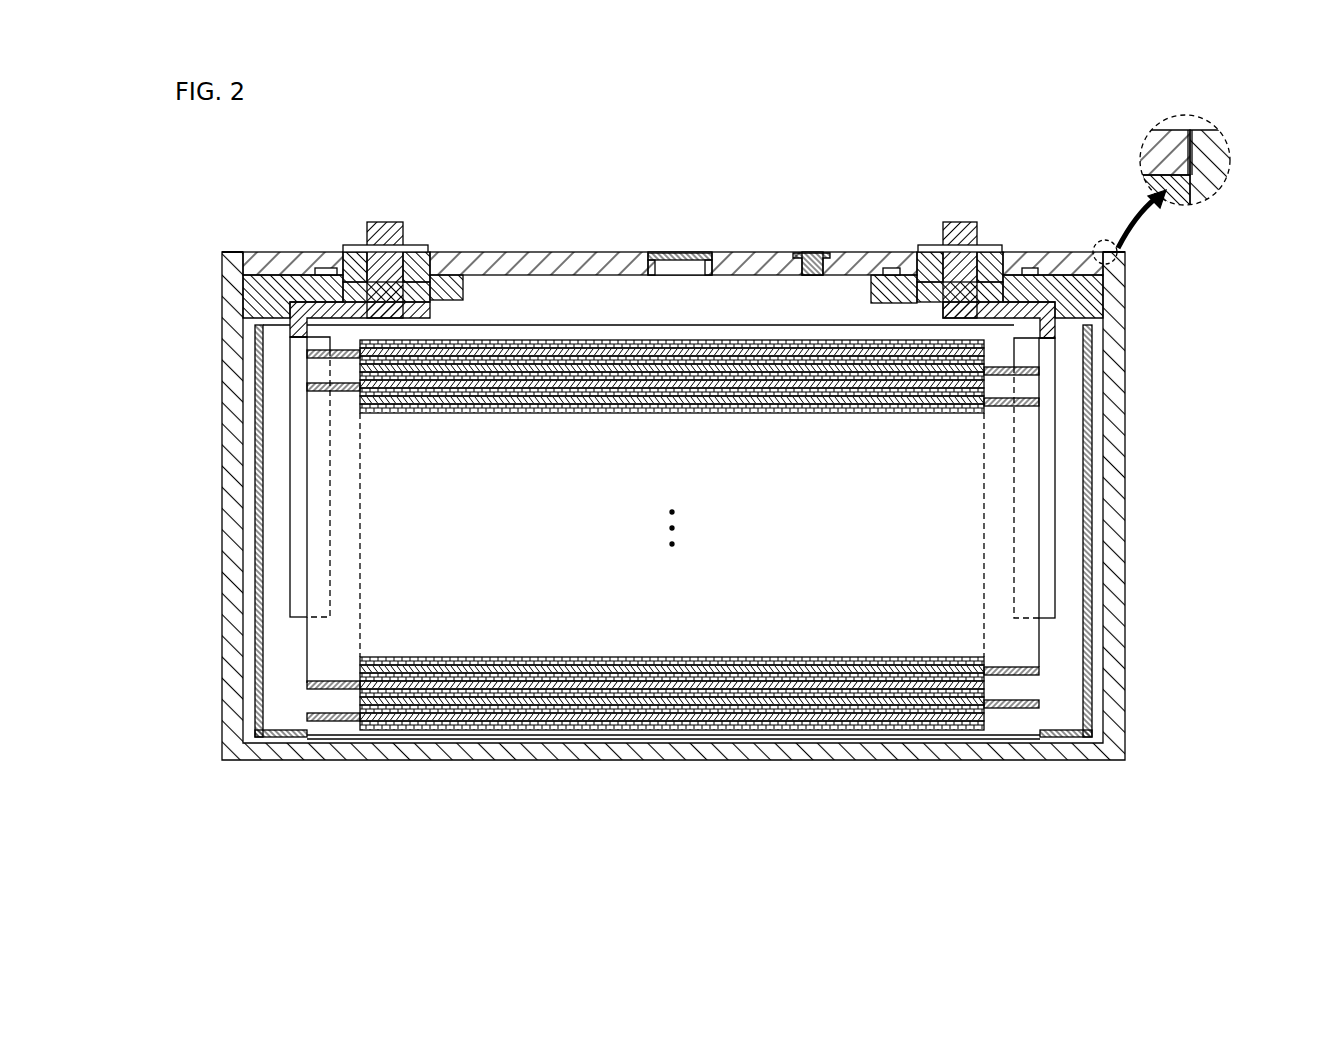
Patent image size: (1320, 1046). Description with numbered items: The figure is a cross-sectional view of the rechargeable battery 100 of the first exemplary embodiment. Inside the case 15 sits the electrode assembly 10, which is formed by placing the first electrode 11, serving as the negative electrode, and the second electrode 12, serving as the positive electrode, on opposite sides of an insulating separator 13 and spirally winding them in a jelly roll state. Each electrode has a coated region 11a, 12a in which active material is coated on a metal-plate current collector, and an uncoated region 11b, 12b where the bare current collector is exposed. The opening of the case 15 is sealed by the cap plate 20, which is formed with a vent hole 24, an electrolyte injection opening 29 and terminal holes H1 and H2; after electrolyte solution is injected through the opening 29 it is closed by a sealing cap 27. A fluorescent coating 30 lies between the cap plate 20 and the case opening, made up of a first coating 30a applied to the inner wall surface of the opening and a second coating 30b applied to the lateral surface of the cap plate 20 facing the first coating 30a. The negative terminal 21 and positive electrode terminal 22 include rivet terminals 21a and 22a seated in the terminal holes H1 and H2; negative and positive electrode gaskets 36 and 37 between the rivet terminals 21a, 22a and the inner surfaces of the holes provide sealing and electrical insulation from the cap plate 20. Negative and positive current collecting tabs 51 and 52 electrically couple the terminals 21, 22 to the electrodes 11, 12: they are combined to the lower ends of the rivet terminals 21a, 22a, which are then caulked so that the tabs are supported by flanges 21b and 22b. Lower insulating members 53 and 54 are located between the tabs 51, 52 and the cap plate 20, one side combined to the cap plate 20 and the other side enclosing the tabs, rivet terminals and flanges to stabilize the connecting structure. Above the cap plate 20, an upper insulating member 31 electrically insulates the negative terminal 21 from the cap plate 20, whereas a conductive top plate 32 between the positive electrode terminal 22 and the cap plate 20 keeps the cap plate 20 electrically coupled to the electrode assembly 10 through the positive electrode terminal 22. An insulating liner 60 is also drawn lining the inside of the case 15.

The rechargeable battery 100 is at (652, 122).
The electrode assembly 10 is at (672, 588).
The first electrode 11 is at (311, 580).
The coated region 11a is at (320, 818).
The uncoated region 11b is at (308, 352).
The second electrode 12 is at (969, 580).
The coated region 12a is at (908, 712).
The uncoated region 12b is at (999, 559).
The separator 13 is at (686, 735).
The case 15 is at (1126, 488).
The cap plate 20 is at (752, 258).
The negative terminal 21 is at (424, 316).
The rivet terminal 21a is at (388, 325).
The flange 21b is at (422, 303).
The positive electrode terminal 22 is at (944, 302).
The rivet terminal 22a is at (1017, 355).
The flange 22b is at (930, 290).
The vent hole 24 is at (680, 263).
The sealing cap 27 is at (815, 253).
The electrolyte injection opening 29 is at (805, 258).
The fluorescent coating 30 is at (722, 173).
The first coating 30a is at (1222, 178).
The second coating 30b is at (1158, 190).
The upper insulating member 31 is at (345, 250).
The top plate 32 is at (996, 249).
The negative electrode gasket 36 is at (307, 262).
The positive electrode gasket 37 is at (900, 262).
The negative current collecting tab 51 is at (289, 463).
The positive current collecting tab 52 is at (1056, 582).
The lower insulating member 53 is at (262, 298).
The lower insulating member 54 is at (1106, 300).
The insulating case 60 is at (1088, 412).
The terminal hole H1 is at (368, 232).
The terminal hole H2 is at (962, 236).